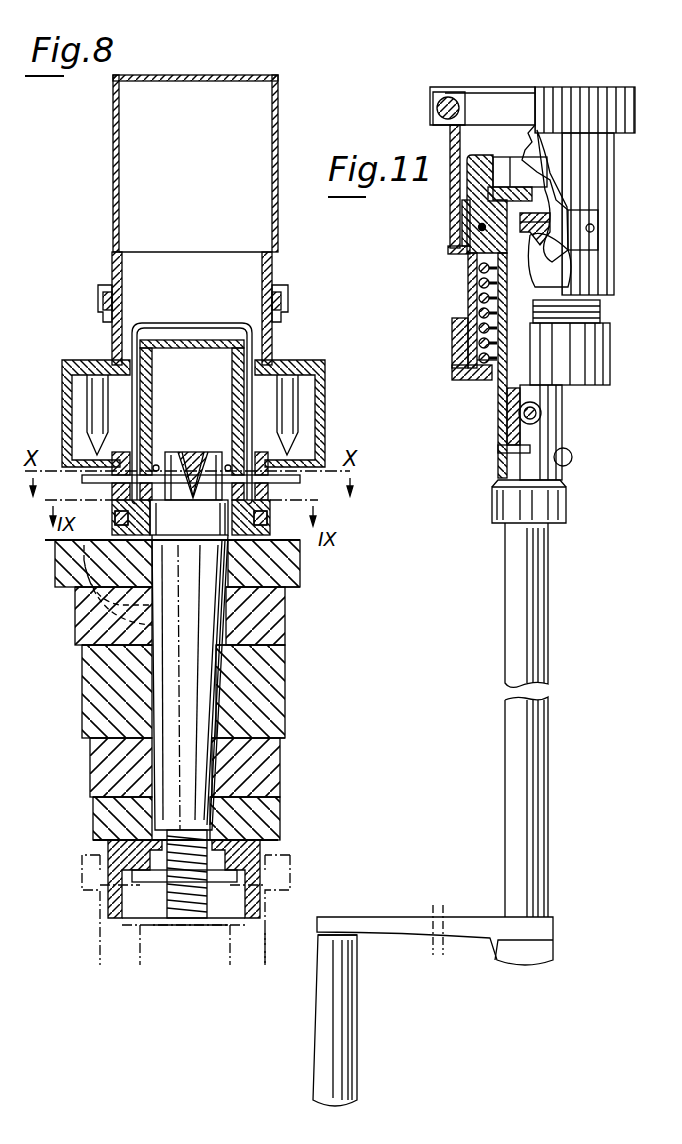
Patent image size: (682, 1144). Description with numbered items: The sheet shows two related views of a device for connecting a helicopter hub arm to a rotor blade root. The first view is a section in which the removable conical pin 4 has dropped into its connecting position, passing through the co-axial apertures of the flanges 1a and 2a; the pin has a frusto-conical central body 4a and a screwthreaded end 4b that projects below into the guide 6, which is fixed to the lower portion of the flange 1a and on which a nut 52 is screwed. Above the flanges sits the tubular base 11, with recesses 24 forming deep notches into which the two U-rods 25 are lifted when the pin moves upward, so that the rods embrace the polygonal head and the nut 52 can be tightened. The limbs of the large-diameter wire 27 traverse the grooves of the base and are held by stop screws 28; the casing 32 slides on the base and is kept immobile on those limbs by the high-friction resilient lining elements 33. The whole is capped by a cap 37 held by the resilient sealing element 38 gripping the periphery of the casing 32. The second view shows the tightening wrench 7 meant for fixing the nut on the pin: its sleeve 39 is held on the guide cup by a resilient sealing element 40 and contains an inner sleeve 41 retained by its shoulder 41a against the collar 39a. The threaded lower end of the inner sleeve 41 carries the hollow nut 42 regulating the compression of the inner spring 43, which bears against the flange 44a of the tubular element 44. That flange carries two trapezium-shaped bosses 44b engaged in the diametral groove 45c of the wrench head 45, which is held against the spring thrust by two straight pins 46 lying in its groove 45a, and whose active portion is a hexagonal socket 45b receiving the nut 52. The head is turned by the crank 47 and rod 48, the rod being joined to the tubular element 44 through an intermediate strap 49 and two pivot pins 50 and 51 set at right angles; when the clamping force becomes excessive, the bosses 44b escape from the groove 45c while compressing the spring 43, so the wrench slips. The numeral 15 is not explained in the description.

In FIG. 8, the cap 37 is at (115, 175).
In FIG. 8, the resilient sealing element 38 is at (99, 302).
In FIG. 8, the wire 27 is at (170, 330).
In FIG. 8, the lining elements 33 is at (125, 356).
In FIG. 8, the casing 32 is at (325, 380).
In FIG. 8, the tubular base 11 is at (268, 470).
In FIG. 8, the recesses 24 is at (222, 452).
In FIG. 8, the U-rods 25 is at (189, 517).
In FIG. 8, the stop screws 28 is at (262, 524).
In FIG. 8, the recess 15 is at (190, 625).
In FIG. 8, the flanges 1a is at (120, 692).
In FIG. 8, the flanges 2a is at (265, 607).
In FIG. 8, the pin 4 is at (265, 638).
In FIG. 8, the frusto-conical central body 4a is at (205, 706).
In FIG. 8, the screwthreaded end 4b is at (178, 900).
In FIG. 8, the guide 6 is at (280, 881).
In FIG. 8, the nut 52 is at (205, 925).
In FIG. 8, the sleeve 39 is at (262, 946).
In FIG. 11, the sleeve 39 is at (450, 160).
In FIG. 11, the resilient sealing element 40 is at (450, 92).
In FIG. 11, the collar 39a is at (462, 258).
In FIG. 11, the wrench head 45 is at (480, 200).
In FIG. 11, the groove 45a is at (568, 234).
In FIG. 11, the hexagonal socket 45b is at (508, 175).
In FIG. 11, the diametral groove 45c is at (572, 265).
In FIG. 11, the straight pins 46 is at (479, 226).
In FIG. 11, the inner sleeve 41 is at (470, 280).
In FIG. 11, the shoulder 41a is at (465, 228).
In FIG. 11, the hollow nut 42 is at (470, 380).
In FIG. 11, the inner spring 43 is at (458, 323).
In FIG. 11, the tubular element 44 is at (498, 420).
In FIG. 11, the flange 44a is at (590, 342).
In FIG. 11, the trapezium-shaped bosses 44b is at (590, 312).
In FIG. 11, the tightening wrench 7 is at (630, 218).
In FIG. 11, the intermediate strap 49 is at (522, 434).
In FIG. 11, the pivot pin 50 is at (543, 415).
In FIG. 11, the pivot pin 51 is at (572, 457).
In FIG. 11, the rod 48 is at (528, 608).
In FIG. 11, the crank 47 is at (385, 917).